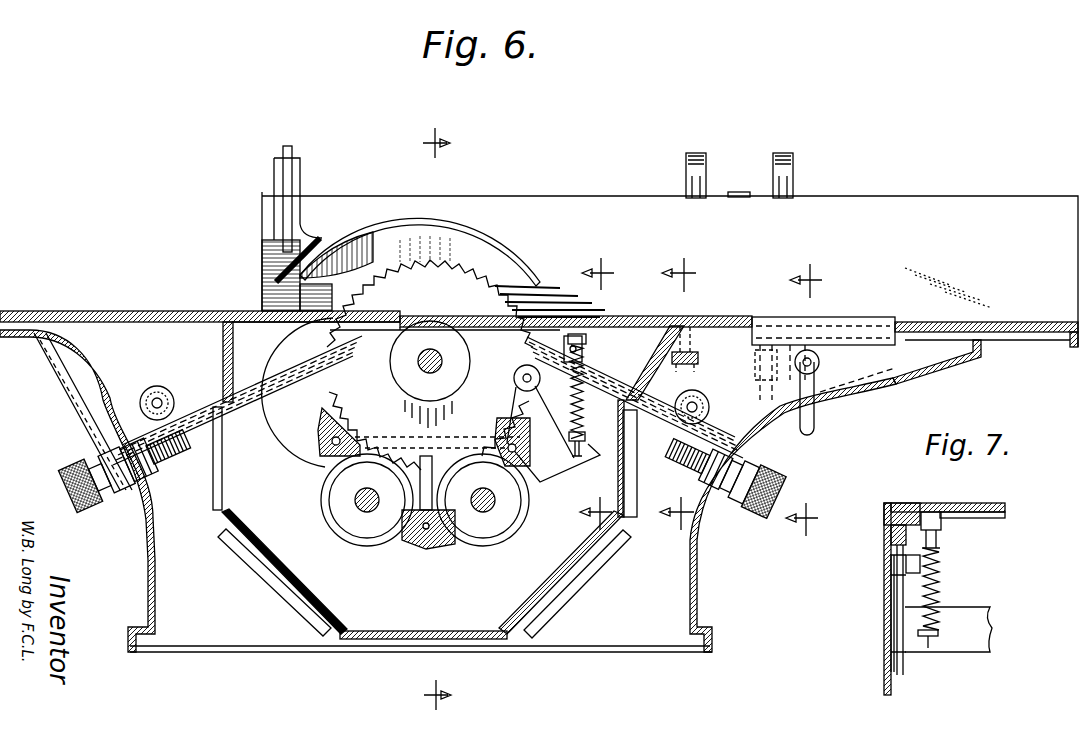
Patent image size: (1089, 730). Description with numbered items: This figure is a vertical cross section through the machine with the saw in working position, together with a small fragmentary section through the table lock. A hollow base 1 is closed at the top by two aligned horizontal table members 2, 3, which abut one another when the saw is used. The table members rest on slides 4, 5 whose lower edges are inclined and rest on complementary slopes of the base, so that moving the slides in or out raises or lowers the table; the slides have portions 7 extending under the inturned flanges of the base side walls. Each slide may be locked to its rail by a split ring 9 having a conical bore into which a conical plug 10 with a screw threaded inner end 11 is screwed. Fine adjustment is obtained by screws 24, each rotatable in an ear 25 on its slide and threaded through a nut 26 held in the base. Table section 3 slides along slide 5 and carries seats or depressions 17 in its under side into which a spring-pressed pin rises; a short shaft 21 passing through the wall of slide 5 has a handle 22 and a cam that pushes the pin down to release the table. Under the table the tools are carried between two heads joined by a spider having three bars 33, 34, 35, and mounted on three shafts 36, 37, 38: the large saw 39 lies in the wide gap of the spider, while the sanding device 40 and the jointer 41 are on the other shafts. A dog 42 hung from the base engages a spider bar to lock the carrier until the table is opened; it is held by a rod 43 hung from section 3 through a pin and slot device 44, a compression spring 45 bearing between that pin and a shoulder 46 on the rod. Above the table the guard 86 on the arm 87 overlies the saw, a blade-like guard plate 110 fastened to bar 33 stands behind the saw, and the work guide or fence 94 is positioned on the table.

In FIG. 6, the hollow base 1 is at (700, 599).
In FIG. 6, the table member 2 is at (120, 311).
In FIG. 6, the table section 3 is at (906, 326).
In FIG. 7, the table section 3 is at (976, 506).
In FIG. 6, the slide 4 is at (58, 376).
In FIG. 6, the slide 5 is at (876, 374).
In FIG. 7, the slide 5 is at (884, 627).
In FIG. 6, the portions of the slides 7 is at (589, 393).
In FIG. 6, the split ring 9 is at (804, 400).
In FIG. 6, the conical plug 10 is at (679, 391).
In FIG. 6, the screw threaded inner end 11 is at (433, 414).
In FIG. 6, the seats or depressions 17 is at (815, 330).
In FIG. 6, the short shaft 21 is at (698, 405).
In FIG. 6, the handle 22 is at (816, 426).
In FIG. 6, the screws 24 is at (190, 452).
In FIG. 6, the ear 25 is at (118, 488).
In FIG. 6, the nut 26 is at (150, 380).
In FIG. 6, the bar of the spider 33 is at (350, 430).
In FIG. 6, the bar of the spider 34 is at (424, 552).
In FIG. 6, the bar of the spider 35 is at (502, 425).
In FIG. 6, the shaft 36 is at (442, 361).
In FIG. 6, the shaft 37 is at (366, 489).
In FIG. 6, the shaft 38 is at (483, 500).
In FIG. 6, the saw 39 is at (468, 287).
In FIG. 6, the sanding device 40 is at (366, 522).
In FIG. 6, the jointer 41 is at (500, 520).
In FIG. 6, the dog 42 is at (538, 472).
In FIG. 7, the dog 42 is at (900, 678).
In FIG. 6, the rod or bar 43 is at (585, 436).
In FIG. 7, the rod or bar 43 is at (990, 637).
In FIG. 6, the pin and slot device 44 is at (577, 450).
In FIG. 7, the pin and slot device 44 is at (908, 655).
In FIG. 6, the compression spring 45 is at (584, 403).
In FIG. 7, the compression spring 45 is at (942, 577).
In FIG. 7, the shoulder 46 is at (942, 550).
In FIG. 6, the guard 86 is at (432, 236).
In FIG. 6, the arm 87 is at (292, 176).
In FIG. 6, the work guide or fence 94 is at (890, 213).
In FIG. 6, the blade-like guard plate 110 is at (298, 430).